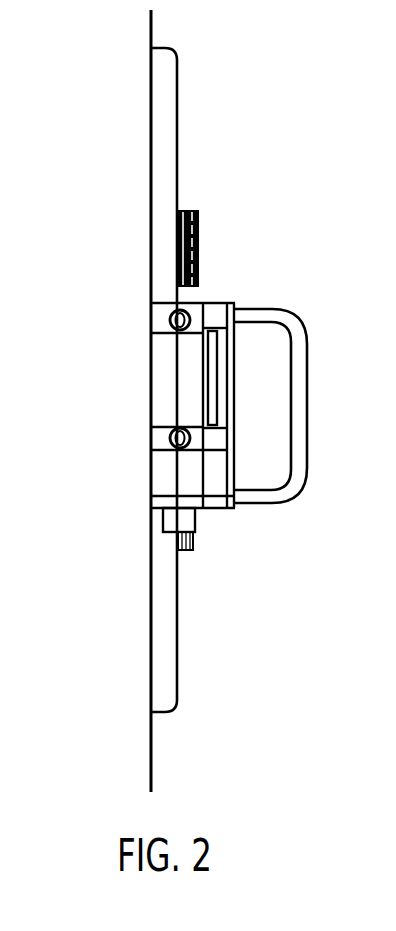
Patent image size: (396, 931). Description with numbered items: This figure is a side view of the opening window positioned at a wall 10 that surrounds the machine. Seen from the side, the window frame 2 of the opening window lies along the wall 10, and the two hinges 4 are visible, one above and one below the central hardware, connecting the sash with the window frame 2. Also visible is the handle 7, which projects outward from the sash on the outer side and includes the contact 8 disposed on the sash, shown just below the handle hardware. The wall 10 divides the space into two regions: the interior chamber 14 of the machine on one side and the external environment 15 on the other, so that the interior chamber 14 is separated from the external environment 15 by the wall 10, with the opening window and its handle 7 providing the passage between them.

The window frame 2 is at (163, 652).
The hinges 4 is at (199, 215).
The handle 7 is at (300, 421).
The contact 8 is at (183, 525).
The wall 10 is at (152, 28).
The interior chamber 14 is at (100, 402).
The external environment 15 is at (313, 288).